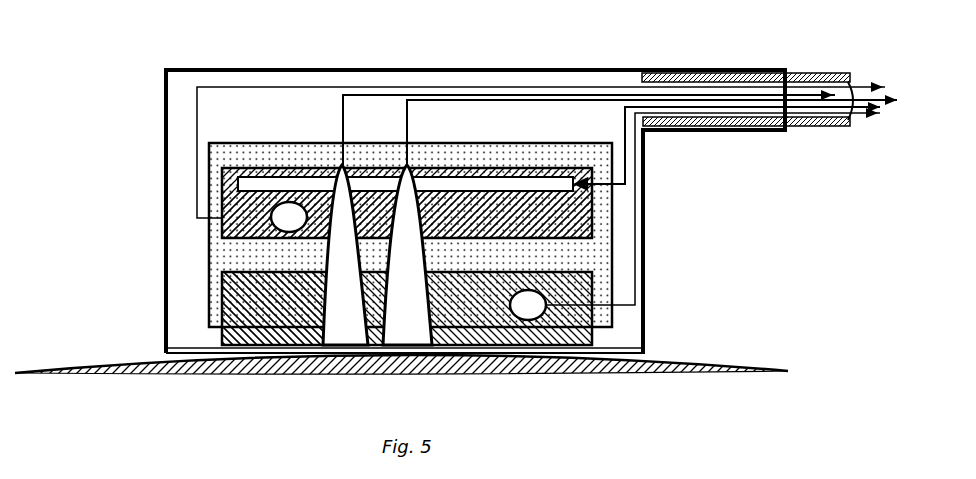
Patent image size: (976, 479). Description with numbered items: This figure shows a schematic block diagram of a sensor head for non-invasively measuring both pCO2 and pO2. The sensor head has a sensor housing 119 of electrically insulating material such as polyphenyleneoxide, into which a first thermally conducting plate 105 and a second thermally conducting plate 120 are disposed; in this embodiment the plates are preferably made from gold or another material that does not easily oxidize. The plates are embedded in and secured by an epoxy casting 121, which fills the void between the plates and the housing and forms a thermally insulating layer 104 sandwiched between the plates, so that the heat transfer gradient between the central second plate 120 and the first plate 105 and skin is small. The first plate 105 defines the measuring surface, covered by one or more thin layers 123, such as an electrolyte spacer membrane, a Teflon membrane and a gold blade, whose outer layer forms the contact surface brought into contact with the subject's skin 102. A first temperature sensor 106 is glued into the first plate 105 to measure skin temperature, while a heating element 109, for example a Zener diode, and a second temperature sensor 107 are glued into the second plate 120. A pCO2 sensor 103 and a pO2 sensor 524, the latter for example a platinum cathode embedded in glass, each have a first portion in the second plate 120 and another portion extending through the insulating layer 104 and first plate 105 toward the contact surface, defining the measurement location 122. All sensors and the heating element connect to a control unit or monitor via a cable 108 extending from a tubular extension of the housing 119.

The subject's skin 102 is at (672, 357).
The pCO2 sensor 103 is at (443, 210).
The thermally insulating layer 104 is at (231, 260).
The first thermally conducting plate 105 is at (220, 335).
The first temperature sensor 106 is at (528, 320).
The second temperature sensor 107 is at (289, 200).
The cable 108 is at (803, 80).
The heating element 109 is at (498, 182).
The sensor housing 119 is at (166, 127).
The second thermally conducting plate 120 is at (547, 222).
The epoxy casting 121 is at (308, 165).
The measurement location 122 is at (397, 350).
The thin layers 123 is at (185, 349).
The pO2 sensor 524 is at (298, 312).